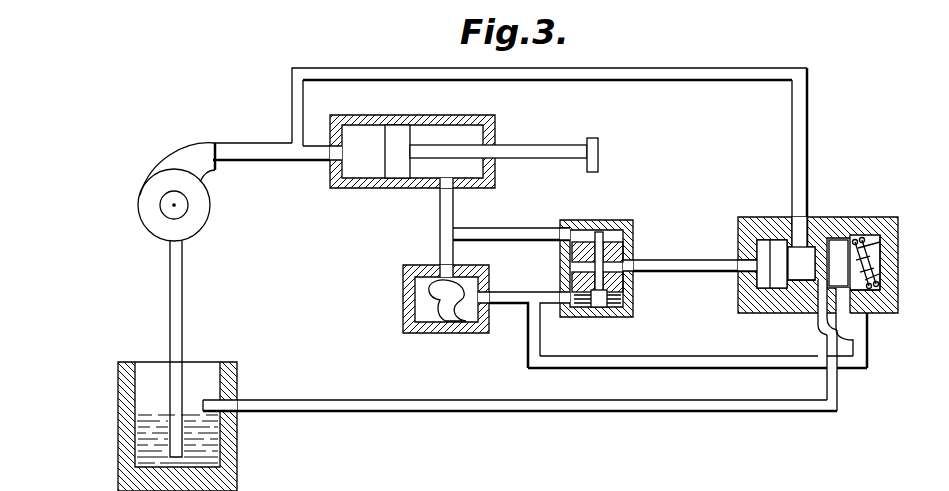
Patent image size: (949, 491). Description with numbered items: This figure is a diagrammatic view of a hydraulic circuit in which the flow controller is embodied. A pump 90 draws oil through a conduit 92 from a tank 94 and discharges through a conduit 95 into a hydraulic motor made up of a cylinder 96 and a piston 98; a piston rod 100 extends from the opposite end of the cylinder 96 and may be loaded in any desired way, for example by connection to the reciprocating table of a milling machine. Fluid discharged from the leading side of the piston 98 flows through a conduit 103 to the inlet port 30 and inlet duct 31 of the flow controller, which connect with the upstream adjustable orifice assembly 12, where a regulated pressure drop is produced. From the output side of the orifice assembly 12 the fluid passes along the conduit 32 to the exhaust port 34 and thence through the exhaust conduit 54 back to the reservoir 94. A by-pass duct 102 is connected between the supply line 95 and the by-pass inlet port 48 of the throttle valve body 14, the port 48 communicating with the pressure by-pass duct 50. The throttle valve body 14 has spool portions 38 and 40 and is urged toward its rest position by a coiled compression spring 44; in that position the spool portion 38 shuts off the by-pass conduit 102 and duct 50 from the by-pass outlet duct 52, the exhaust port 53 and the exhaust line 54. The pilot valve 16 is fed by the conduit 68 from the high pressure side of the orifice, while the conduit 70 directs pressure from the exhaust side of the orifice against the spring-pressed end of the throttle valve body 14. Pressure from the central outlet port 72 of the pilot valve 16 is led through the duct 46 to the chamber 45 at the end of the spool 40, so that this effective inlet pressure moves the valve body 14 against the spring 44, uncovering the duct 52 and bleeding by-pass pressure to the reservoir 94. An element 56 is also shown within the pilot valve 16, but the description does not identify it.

The adjustable orifice outlet assembly 12 is at (403, 298).
The throttle valve body 14 is at (769, 216).
The pilot valve body 16 is at (617, 226).
The flow controller inlet port 30 is at (893, 302).
The cored cylindrical inlet duct 31 is at (880, 226).
The conduit 32 is at (607, 356).
The exhaust port 34 is at (858, 316).
The spool portion 38 is at (848, 235).
The spool portion 40 is at (777, 247).
The coiled compression spring 44 is at (893, 258).
The effective inlet pressure chamber 45 is at (760, 283).
The duct 46 is at (690, 272).
The by-pass inlet port 48 is at (811, 225).
The pressure by-pass duct 50 is at (793, 299).
The by-pass outlet duct 52 is at (812, 296).
The exhaust port 53 is at (822, 333).
The exhaust conduit 54 is at (534, 403).
The spring 56 is at (626, 296).
The conduit 68 is at (508, 229).
The conduit 70 is at (549, 293).
The central outlet port 72 is at (634, 261).
The pump 90 is at (142, 200).
The conduit 92 is at (183, 310).
The tank 94 is at (120, 399).
The conduit 95 is at (236, 148).
The cylinder 96 is at (348, 190).
The piston 98 is at (393, 176).
The piston rod 100 is at (523, 152).
The by-pass duct 102 is at (614, 72).
The conduit 103 is at (440, 216).